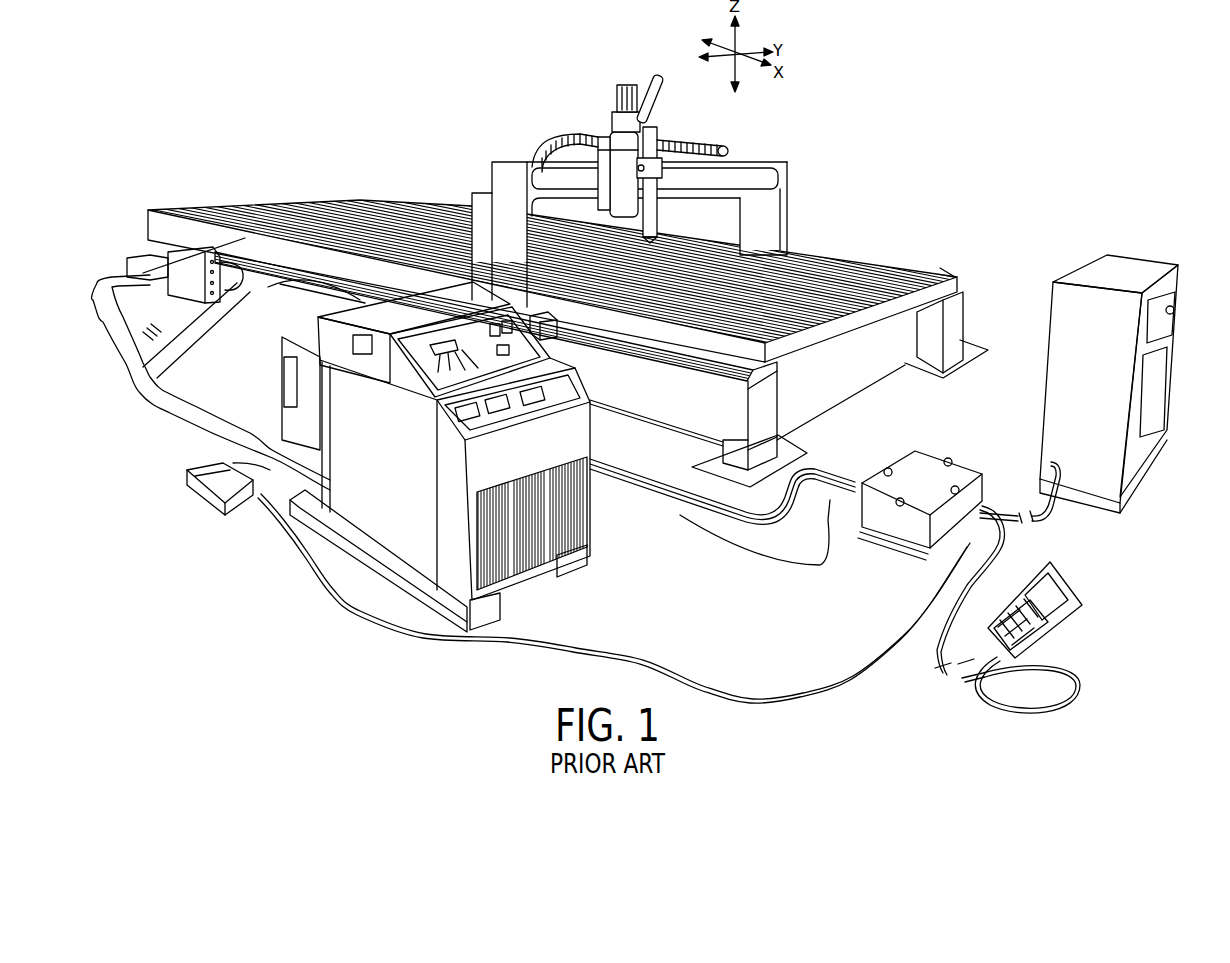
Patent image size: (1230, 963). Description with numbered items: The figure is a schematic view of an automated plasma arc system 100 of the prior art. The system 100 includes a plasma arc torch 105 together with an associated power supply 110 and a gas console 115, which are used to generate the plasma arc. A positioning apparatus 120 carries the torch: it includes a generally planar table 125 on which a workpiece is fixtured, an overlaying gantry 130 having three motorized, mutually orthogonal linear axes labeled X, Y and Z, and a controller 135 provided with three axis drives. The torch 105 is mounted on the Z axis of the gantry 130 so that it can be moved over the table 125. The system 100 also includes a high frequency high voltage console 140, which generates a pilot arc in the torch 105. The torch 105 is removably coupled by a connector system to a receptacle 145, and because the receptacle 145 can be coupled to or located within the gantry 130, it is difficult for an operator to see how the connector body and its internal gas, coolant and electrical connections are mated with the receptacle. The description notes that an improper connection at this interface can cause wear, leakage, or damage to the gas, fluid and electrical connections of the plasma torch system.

The automated plasma arc system 100 is at (204, 128).
The plasma arc torch 105 is at (655, 235).
The power supply 110 is at (523, 570).
The gas console 115 is at (552, 353).
The positioning apparatus 120 is at (852, 240).
The table 125 is at (928, 272).
The gantry 130 is at (782, 180).
The controller 135 is at (1105, 532).
The high frequency high voltage console 140 is at (192, 279).
The receptacle 145 is at (652, 205).